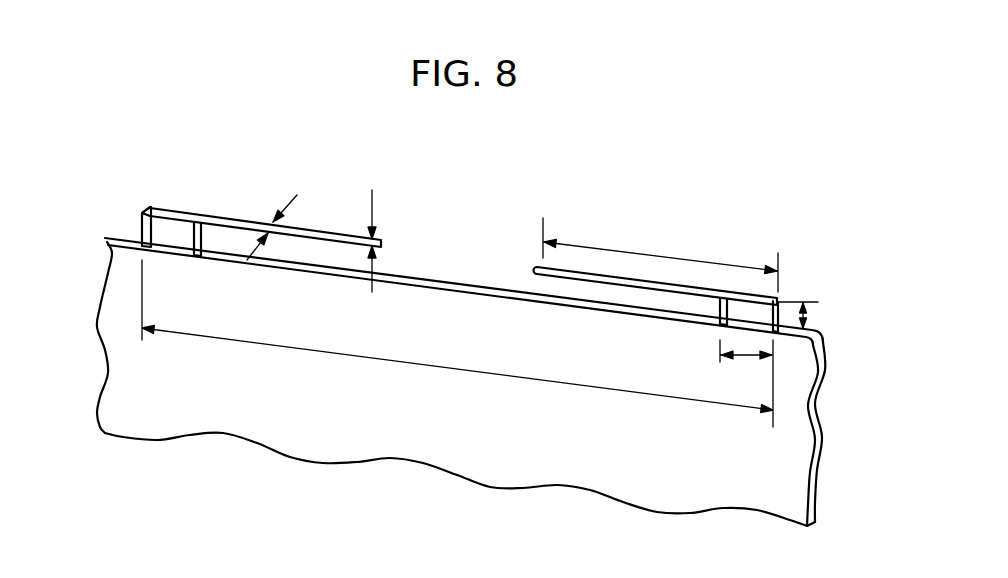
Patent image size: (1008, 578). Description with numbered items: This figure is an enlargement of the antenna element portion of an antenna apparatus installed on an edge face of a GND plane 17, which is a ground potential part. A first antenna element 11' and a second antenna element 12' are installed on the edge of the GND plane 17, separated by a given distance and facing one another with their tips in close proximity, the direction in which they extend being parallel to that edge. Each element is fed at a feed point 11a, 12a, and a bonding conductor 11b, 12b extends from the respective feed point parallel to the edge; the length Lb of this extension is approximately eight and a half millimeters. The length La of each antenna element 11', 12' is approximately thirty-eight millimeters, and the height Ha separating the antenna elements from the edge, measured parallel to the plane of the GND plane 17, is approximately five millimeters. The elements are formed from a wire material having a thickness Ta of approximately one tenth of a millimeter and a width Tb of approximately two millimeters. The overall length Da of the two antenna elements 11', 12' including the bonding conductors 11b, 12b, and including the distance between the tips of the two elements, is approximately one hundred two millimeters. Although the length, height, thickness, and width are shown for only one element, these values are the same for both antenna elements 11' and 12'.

The GND plane 17 is at (793, 472).
The first antenna element 11' is at (265, 193).
The feed point 11a is at (190, 228).
The bonding conductor 11b is at (141, 233).
The second antenna element 12' is at (656, 238).
The feed point 12a is at (724, 301).
The bonding conductor 12b is at (772, 306).
The thickness Ta is at (389, 241).
The width Tb is at (283, 210).
The length of antenna element La is at (655, 250).
The length of bonding conductor Lb is at (746, 369).
The overall length Da is at (457, 343).
The height Ha is at (816, 317).